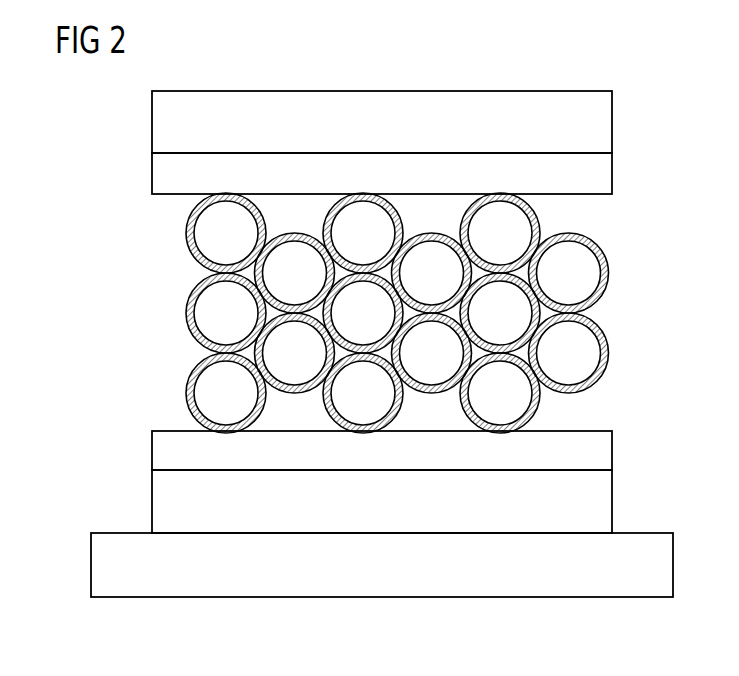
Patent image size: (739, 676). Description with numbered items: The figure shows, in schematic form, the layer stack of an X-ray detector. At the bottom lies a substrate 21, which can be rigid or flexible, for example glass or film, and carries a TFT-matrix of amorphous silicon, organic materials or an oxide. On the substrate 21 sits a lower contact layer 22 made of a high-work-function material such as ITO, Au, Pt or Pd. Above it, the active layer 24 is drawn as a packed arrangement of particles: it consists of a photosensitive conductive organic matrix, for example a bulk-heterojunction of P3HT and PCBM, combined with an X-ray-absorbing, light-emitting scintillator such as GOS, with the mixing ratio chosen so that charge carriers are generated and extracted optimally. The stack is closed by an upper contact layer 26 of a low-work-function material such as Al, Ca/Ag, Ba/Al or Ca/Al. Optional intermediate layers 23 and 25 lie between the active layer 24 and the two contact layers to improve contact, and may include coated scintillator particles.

The substrate 21 is at (91, 570).
The lower contact layer 22 is at (152, 502).
The intermediate layer 23 is at (152, 446).
The active layer 24 is at (138, 317).
The intermediate layer 25 is at (152, 170).
The upper contact layer 26 is at (152, 124).